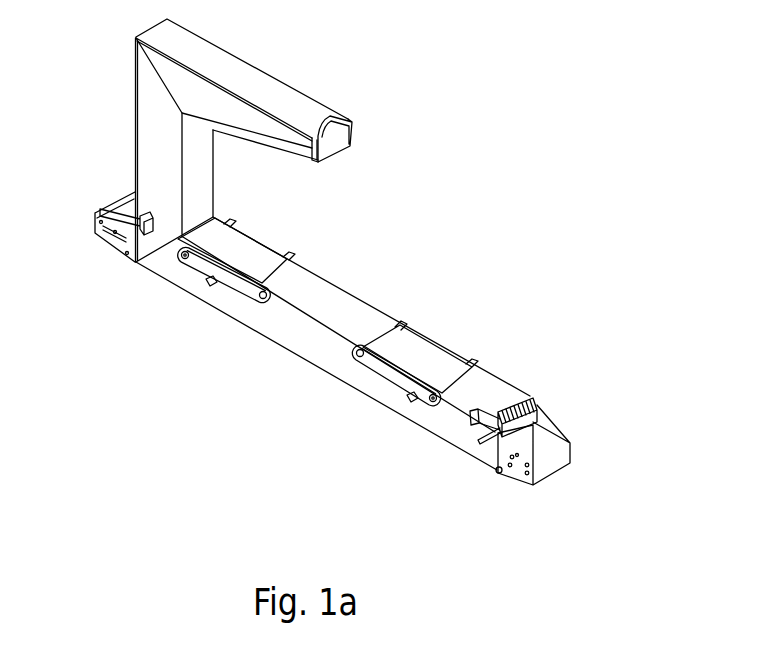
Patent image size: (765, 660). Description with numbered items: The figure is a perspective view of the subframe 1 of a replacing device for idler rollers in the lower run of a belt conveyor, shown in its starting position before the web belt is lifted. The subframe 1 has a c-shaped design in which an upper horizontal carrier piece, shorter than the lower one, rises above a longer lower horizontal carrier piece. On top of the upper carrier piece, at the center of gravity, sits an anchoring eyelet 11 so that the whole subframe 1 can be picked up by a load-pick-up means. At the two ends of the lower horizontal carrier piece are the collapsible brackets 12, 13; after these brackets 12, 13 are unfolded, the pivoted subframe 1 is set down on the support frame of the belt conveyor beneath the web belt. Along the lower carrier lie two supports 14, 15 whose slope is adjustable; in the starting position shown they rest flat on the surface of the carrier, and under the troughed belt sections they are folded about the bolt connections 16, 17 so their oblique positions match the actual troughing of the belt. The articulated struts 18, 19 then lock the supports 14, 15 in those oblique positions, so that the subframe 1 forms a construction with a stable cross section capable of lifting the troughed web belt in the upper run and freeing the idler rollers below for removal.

The subframe 1 is at (288, 398).
The anchoring eyelet 11 is at (333, 113).
The collapsible bracket 12 is at (112, 212).
The collapsible bracket 13 is at (545, 442).
The support 14 is at (258, 253).
The support 15 is at (433, 353).
The bolt connection 16 is at (180, 248).
The bolt connection 17 is at (433, 402).
The strut 18 is at (233, 289).
The strut 19 is at (388, 366).